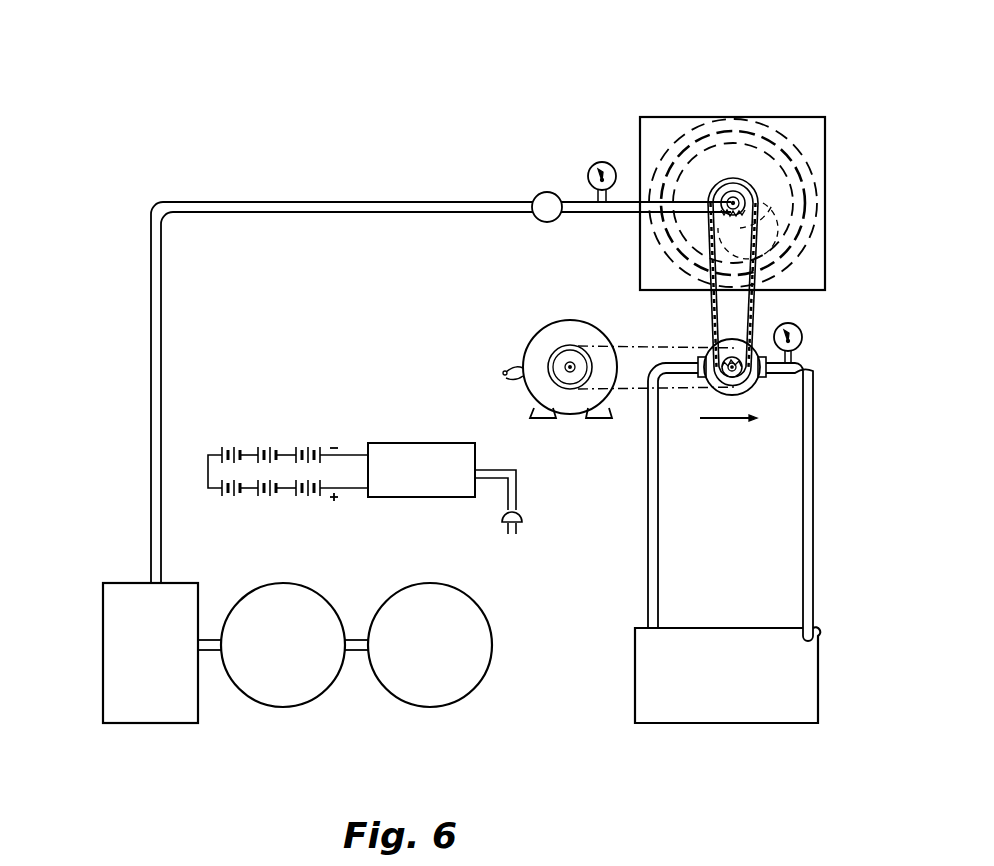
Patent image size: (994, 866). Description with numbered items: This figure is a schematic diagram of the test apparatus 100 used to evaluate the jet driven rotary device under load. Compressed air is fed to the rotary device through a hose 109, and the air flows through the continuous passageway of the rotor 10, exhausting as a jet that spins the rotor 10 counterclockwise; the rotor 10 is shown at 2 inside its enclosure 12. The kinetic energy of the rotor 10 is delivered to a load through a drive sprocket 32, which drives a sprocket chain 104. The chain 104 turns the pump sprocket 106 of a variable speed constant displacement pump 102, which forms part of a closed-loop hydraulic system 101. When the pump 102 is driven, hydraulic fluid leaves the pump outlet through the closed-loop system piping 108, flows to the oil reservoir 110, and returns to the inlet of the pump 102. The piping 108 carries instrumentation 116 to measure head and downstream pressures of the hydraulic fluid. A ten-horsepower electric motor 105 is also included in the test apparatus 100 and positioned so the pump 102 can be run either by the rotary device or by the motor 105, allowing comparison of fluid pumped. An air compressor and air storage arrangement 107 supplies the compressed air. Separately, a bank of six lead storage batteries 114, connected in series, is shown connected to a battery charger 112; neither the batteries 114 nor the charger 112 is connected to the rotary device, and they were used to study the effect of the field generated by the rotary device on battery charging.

The test apparatus 100 is at (744, 47).
The flywheel 2 is at (757, 101).
The flywheel housing 12 is at (640, 138).
The rotor 10 is at (788, 156).
The drive sprocket 32 is at (752, 203).
The sprocket chain 104 is at (710, 313).
The closed-loop hydraulic system 101 is at (685, 421).
The variable speed constant displacement pump 102 is at (707, 395).
The pump sprocket 106 is at (730, 400).
The instrumentation 116 is at (801, 331).
The closed-loop system piping 108 is at (818, 541).
The oil reservoir 110 is at (652, 702).
The electric motor 105 is at (538, 343).
The hose 109 is at (426, 202).
The air compressor 107 is at (112, 616).
The lead storage batteries 114 is at (277, 444).
The battery charger 112 is at (440, 444).